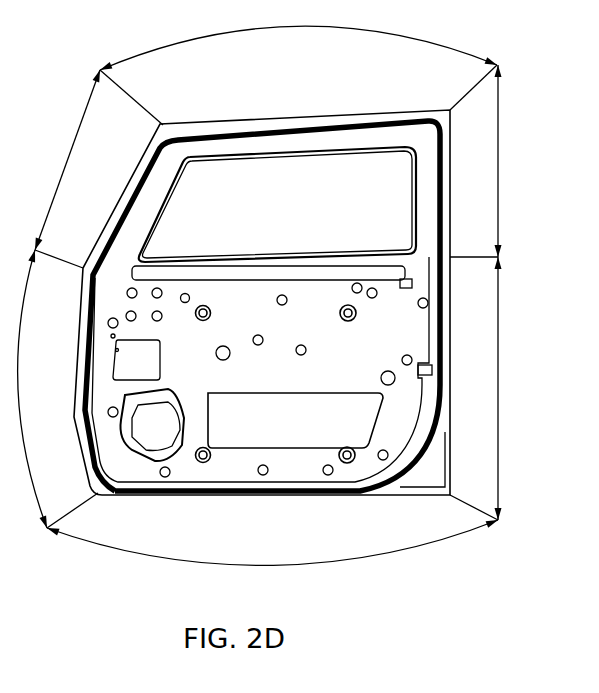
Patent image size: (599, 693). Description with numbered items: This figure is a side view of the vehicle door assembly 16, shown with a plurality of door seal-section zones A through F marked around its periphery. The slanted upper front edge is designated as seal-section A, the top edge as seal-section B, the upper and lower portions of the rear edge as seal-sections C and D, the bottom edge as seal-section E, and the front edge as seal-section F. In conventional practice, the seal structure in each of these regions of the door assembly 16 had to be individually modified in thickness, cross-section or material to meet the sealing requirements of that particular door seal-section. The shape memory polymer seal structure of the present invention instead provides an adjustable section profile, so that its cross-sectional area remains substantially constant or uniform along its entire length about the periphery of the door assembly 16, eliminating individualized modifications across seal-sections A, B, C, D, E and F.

The vehicle door assembly 16 is at (342, 115).
The door seal-section zone A is at (99, 169).
The door seal-section zone B is at (298, 68).
The door seal-section zone C is at (476, 161).
The door seal-section zone D is at (476, 388).
The door seal-section zone E is at (272, 542).
The door seal-section zone F is at (58, 389).